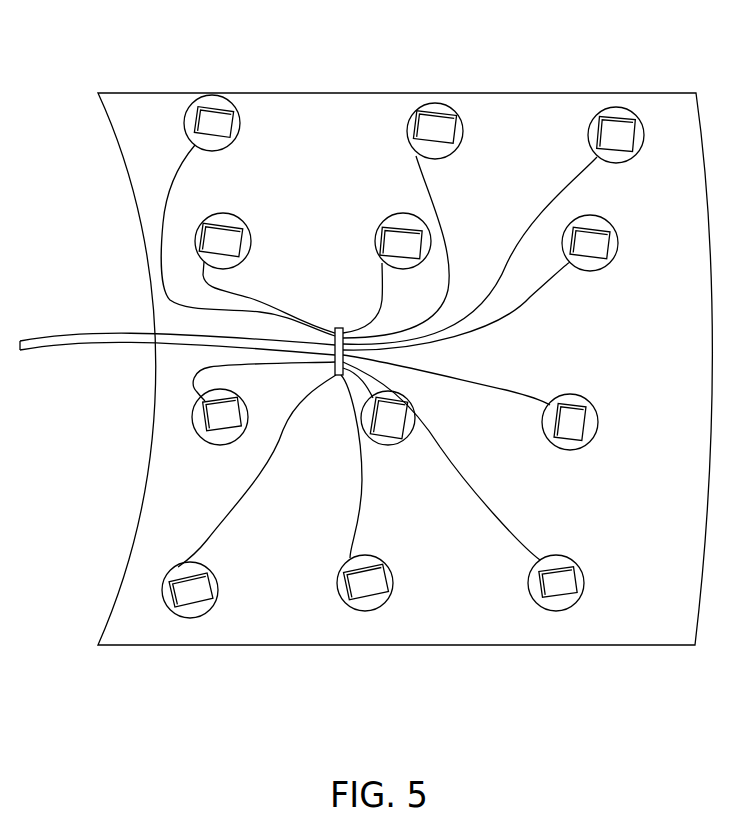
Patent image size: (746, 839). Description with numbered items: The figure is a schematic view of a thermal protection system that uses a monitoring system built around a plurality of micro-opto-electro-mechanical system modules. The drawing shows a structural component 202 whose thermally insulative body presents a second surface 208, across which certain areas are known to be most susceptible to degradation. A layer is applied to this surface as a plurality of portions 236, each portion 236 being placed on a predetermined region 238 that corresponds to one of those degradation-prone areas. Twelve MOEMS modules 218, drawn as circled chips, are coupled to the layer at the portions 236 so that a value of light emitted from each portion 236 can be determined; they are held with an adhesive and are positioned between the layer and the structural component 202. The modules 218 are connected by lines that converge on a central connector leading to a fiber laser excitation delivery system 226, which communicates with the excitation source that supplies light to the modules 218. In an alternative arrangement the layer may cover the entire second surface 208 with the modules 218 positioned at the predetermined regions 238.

The structural component 202 is at (118, 92).
The second surface 208 is at (181, 491).
The MOEMS module 218 is at (393, 322).
The fiber laser excitation delivery system 226 is at (88, 350).
The portion of layer 236 is at (426, 105).
The predetermined region 238 is at (401, 119).